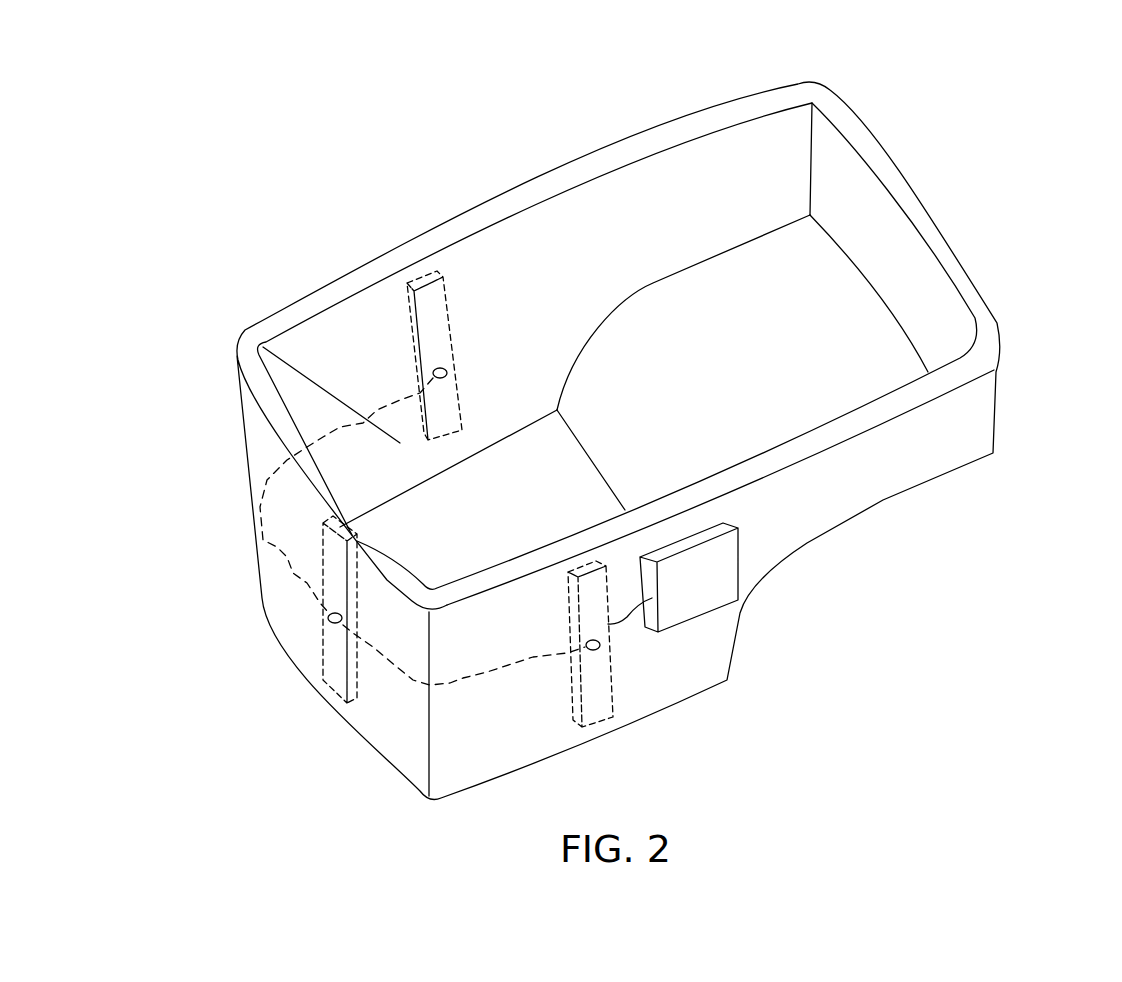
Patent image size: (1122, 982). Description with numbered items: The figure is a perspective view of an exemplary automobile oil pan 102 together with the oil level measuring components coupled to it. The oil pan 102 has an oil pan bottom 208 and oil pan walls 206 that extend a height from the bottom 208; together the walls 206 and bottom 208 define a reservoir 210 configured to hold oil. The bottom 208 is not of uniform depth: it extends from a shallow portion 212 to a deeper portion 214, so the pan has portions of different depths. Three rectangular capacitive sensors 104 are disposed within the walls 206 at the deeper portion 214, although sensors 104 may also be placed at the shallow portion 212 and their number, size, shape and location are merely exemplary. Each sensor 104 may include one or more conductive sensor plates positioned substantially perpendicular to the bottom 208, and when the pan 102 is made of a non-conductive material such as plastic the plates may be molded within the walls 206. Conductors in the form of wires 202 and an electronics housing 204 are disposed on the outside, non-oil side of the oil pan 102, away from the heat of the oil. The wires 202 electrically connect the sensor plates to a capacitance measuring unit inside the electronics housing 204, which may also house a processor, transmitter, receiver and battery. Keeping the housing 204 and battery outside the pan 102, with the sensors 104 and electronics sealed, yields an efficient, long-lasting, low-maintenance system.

The oil pan 102 is at (883, 142).
The capacitive sensors 104 is at (436, 282).
The conductors (wires) 202 is at (282, 565).
The electronics housing 204 is at (707, 582).
The oil pan walls 206 is at (617, 222).
The oil pan bottom 208 is at (833, 392).
The reservoir 210 is at (270, 342).
The shallow portion 212 is at (830, 313).
The deeper portion 214 is at (403, 443).